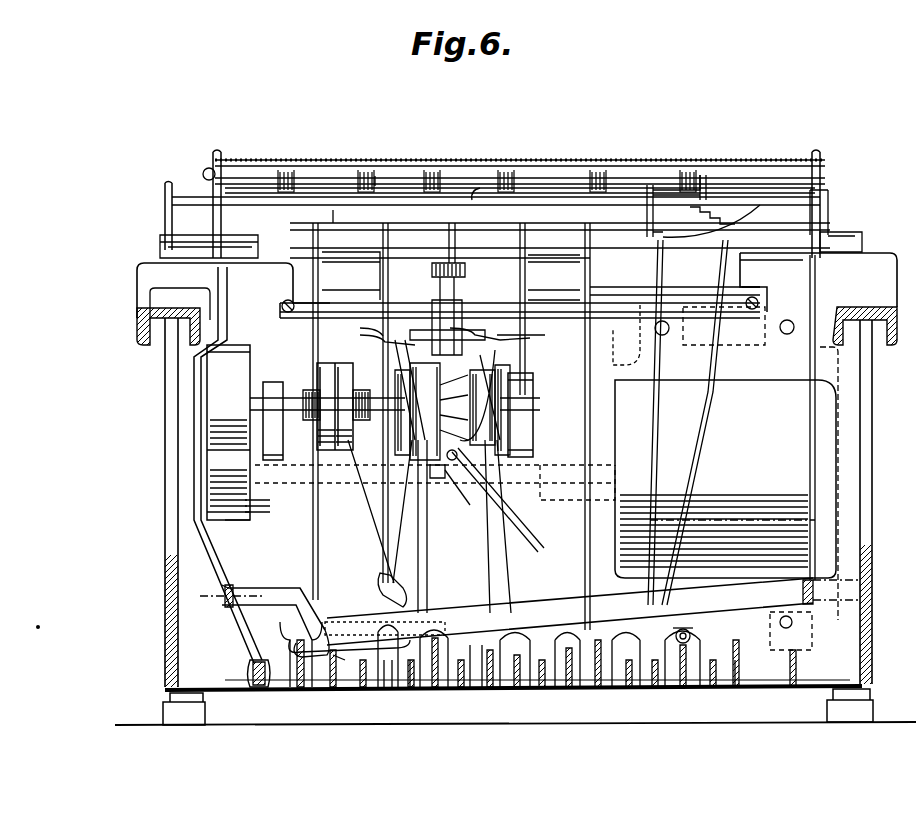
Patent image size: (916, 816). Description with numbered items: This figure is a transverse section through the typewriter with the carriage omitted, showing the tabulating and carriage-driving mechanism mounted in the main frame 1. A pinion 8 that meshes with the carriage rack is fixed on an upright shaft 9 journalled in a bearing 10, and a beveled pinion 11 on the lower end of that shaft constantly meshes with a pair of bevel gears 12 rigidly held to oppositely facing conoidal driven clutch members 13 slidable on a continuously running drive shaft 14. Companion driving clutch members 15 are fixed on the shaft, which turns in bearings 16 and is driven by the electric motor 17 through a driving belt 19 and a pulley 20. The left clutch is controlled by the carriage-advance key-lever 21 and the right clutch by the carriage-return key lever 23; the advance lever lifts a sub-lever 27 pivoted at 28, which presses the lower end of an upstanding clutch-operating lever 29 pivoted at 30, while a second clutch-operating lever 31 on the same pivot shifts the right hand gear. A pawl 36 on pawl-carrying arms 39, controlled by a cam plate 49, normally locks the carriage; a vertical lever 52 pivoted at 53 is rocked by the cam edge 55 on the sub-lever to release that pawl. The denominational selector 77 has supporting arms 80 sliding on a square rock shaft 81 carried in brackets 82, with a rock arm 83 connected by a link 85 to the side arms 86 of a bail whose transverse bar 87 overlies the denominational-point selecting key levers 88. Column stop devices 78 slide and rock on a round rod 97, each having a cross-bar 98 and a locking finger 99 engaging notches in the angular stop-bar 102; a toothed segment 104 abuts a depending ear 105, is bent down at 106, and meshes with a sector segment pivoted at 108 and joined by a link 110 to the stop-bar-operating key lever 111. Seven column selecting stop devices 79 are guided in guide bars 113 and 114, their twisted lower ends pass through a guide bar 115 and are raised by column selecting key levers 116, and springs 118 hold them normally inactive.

The main frame 1 is at (150, 330).
The pinion 8 is at (465, 272).
The upright shaft 9 is at (462, 330).
The bearing 10 is at (435, 300).
The beveled pinion 11 is at (440, 290).
The bevel gears 12 is at (430, 430).
The driven clutch members 13 is at (402, 462).
The drive shaft 14 is at (384, 398).
The driving clutch members 15 is at (350, 420).
The bearings 16 is at (522, 432).
The electric motor 17 is at (725, 417).
The driving belt 19 is at (232, 522).
The pulley 20 is at (250, 372).
The carriage-advance key-lever 21 is at (296, 692).
The carriage-return key lever 23 is at (790, 690).
The sub-lever 27 is at (312, 630).
The sub-lever pivot 28 is at (352, 692).
The clutch-operating lever 29 is at (392, 575).
The pivot 30 is at (400, 345).
The clutch-operating lever 31 is at (522, 540).
The pawl 36 is at (500, 358).
The pawl-carrying arms 39 is at (362, 337).
The cam plate 49 is at (492, 320).
The vertical lever 52 is at (470, 505).
The pivot 53 is at (430, 470).
The cam edge 55 is at (380, 612).
The selector 77 is at (693, 240).
The column stop devices 78 is at (506, 176).
The column selecting stop devices 79 is at (320, 240).
The supporting arms 80 is at (650, 232).
The rock shaft 81 is at (168, 204).
The brackets 82 is at (200, 232).
The rock arm 83 is at (828, 200).
The link 85 is at (812, 397).
The side arms 86 is at (228, 608).
The bail transverse bar 87 is at (298, 590).
The denominational-point selecting key levers 88 is at (330, 690).
The rod 97 is at (752, 180).
The cross-bar 98 is at (484, 206).
The locking finger 99 is at (378, 178).
The angular stop-bar 102 is at (560, 172).
The toothed segment 104 is at (210, 172).
The depending ears 105 is at (822, 166).
The bent-down upper end 106 is at (217, 162).
The sector segment pivot 108 is at (213, 190).
The link 110 is at (228, 302).
The stop-bar-operating key lever 111 is at (258, 690).
The guide bar 113 is at (333, 210).
The guide bar 114 is at (640, 335).
The guide bar 115 is at (690, 630).
The column selecting key levers 116 is at (410, 692).
The springs 118 is at (380, 268).